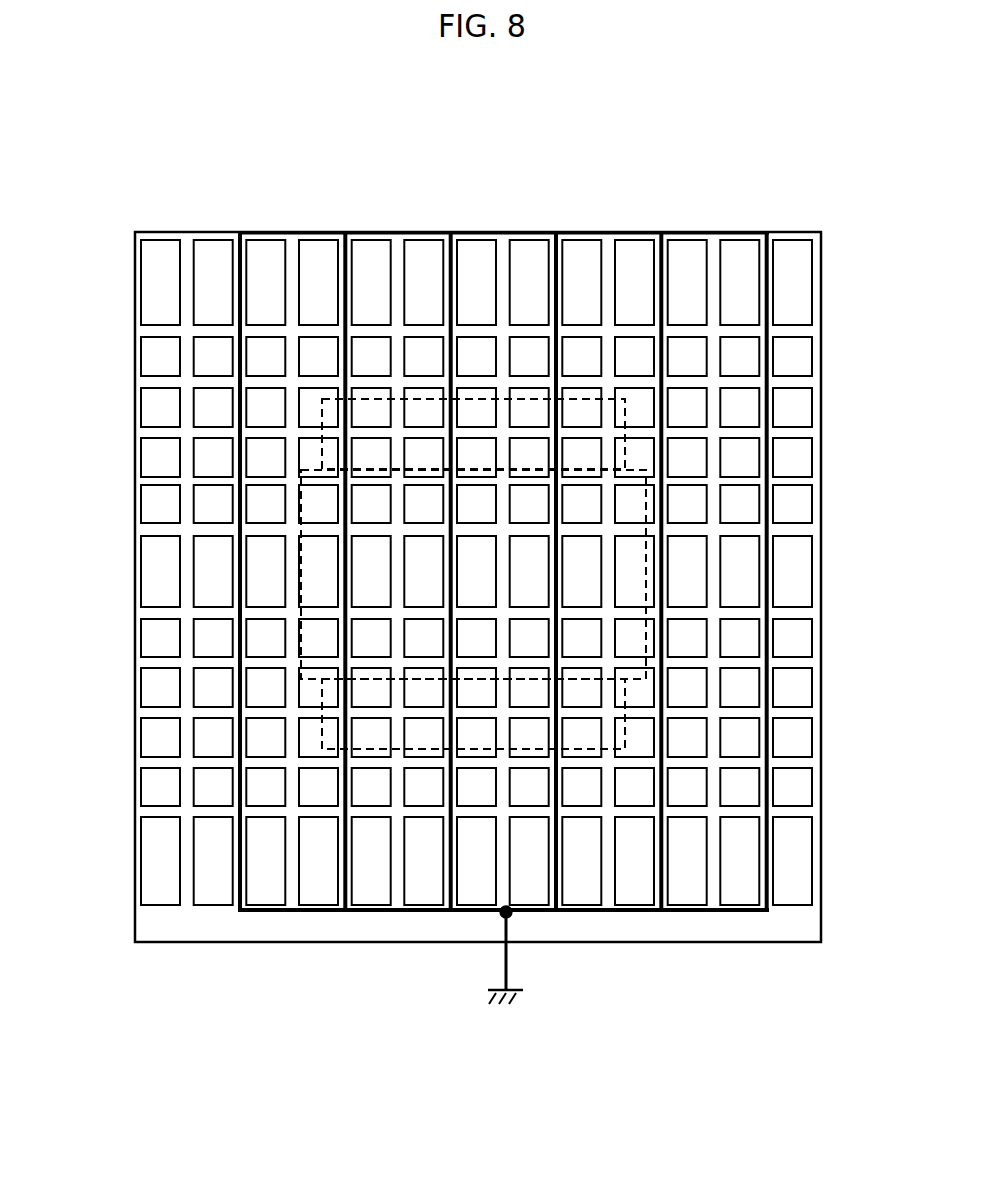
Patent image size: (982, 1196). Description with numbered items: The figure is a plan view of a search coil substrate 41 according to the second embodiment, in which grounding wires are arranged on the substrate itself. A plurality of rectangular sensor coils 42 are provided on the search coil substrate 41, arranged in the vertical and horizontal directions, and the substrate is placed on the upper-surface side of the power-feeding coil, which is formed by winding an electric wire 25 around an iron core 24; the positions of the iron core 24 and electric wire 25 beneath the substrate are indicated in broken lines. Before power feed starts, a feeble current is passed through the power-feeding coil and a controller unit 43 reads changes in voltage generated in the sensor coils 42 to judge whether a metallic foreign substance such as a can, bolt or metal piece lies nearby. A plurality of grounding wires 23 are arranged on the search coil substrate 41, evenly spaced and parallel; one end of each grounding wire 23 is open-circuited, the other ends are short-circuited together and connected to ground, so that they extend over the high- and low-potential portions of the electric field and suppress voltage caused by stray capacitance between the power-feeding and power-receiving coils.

The search coil substrate 41 is at (444, 191).
The grounding wires 23 is at (241, 273).
The iron core 24 is at (577, 413).
The electric wire 25 is at (636, 580).
The sensor coils 42 is at (147, 287).
The controller unit 43 is at (158, 893).